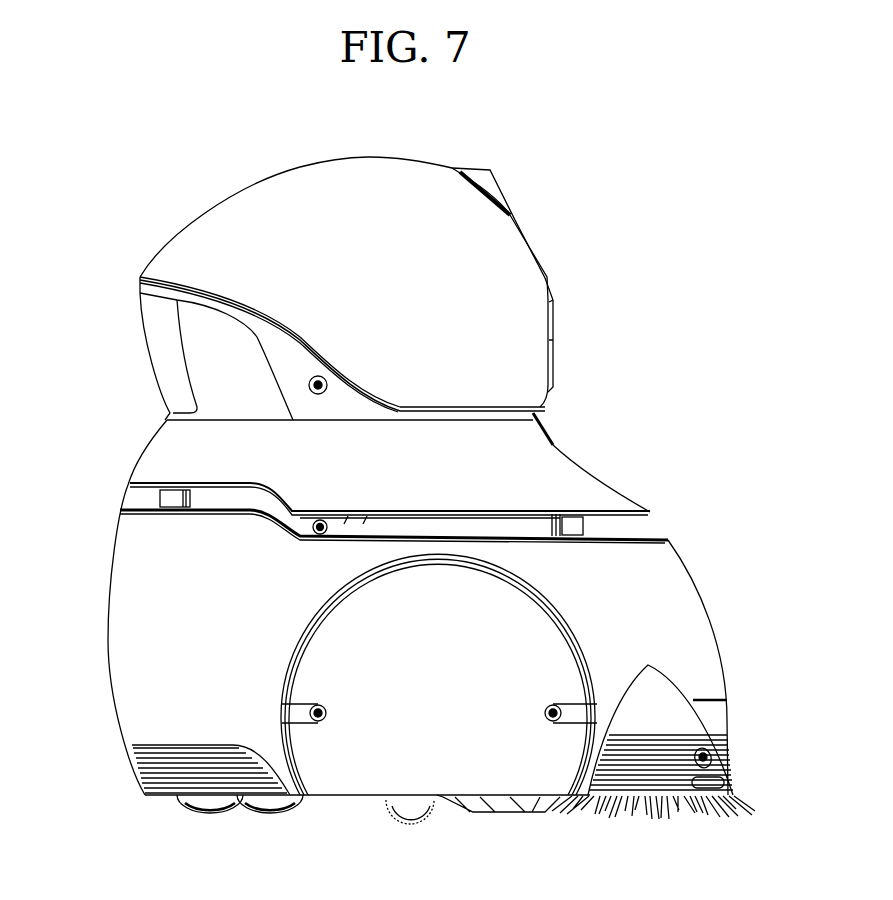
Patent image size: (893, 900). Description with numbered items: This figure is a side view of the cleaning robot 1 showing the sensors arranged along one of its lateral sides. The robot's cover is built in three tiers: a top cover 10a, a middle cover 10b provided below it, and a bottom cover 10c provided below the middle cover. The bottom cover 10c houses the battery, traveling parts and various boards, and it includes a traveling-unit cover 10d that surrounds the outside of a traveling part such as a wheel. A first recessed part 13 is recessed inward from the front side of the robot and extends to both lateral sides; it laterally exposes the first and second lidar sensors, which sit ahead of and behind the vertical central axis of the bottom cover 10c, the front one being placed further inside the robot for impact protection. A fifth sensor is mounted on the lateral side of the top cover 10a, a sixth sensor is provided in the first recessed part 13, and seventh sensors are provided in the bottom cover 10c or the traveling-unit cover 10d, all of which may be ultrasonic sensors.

The cleaning robot 1 is at (138, 168).
The top cover 10a is at (348, 165).
The middle cover 10b is at (553, 447).
The bottom cover 10c is at (688, 586).
The traveling-unit cover 10d is at (436, 773).
The first recessed part 13 is at (662, 521).